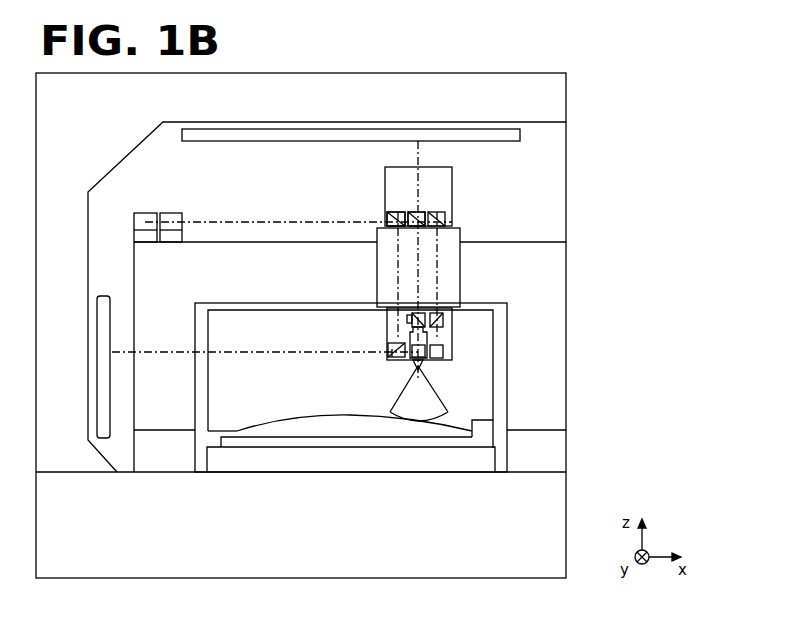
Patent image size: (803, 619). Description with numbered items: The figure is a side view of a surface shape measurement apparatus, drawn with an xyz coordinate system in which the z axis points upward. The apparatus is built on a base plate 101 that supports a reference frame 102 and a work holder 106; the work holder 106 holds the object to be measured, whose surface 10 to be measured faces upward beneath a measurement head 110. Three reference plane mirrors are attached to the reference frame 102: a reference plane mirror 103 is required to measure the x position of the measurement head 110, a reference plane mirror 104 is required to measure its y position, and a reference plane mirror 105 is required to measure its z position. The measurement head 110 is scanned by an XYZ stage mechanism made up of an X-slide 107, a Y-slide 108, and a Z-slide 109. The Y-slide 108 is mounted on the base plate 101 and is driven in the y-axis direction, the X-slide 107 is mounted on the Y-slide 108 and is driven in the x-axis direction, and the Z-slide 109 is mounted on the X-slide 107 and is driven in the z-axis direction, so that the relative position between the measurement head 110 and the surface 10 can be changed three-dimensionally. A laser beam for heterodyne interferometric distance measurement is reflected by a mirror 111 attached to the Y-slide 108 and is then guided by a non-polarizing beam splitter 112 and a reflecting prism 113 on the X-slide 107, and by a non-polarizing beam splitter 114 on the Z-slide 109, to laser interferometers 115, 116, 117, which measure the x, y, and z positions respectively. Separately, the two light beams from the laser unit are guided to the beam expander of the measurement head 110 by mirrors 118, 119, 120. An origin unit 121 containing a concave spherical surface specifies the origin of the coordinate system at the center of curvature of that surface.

The surface to be measured 10 is at (305, 425).
The base plate 101 is at (73, 553).
The reference frame 102 is at (517, 73).
The reference plane mirror 103 is at (107, 300).
The reference plane mirror 104 is at (483, 372).
The reference plane mirror 105 is at (522, 134).
The work holder 106 is at (338, 458).
The X-slide 107 is at (450, 260).
The Y-slide 108 is at (166, 452).
The Z-slide 109 is at (445, 177).
The measurement head 110 is at (408, 333).
The mirror 111 is at (172, 213).
The non-polarizing beam splitter 112 is at (387, 210).
The reflecting prism 113 is at (447, 217).
The non-polarizing beam splitter 114 is at (455, 320).
The laser interferometer 115 is at (388, 353).
The laser interferometer 116 is at (447, 350).
The laser interferometer 117 is at (413, 313).
The mirror 118 is at (145, 213).
The mirror 119 is at (413, 211).
The mirror 120 is at (408, 360).
The origin unit 121 is at (485, 427).